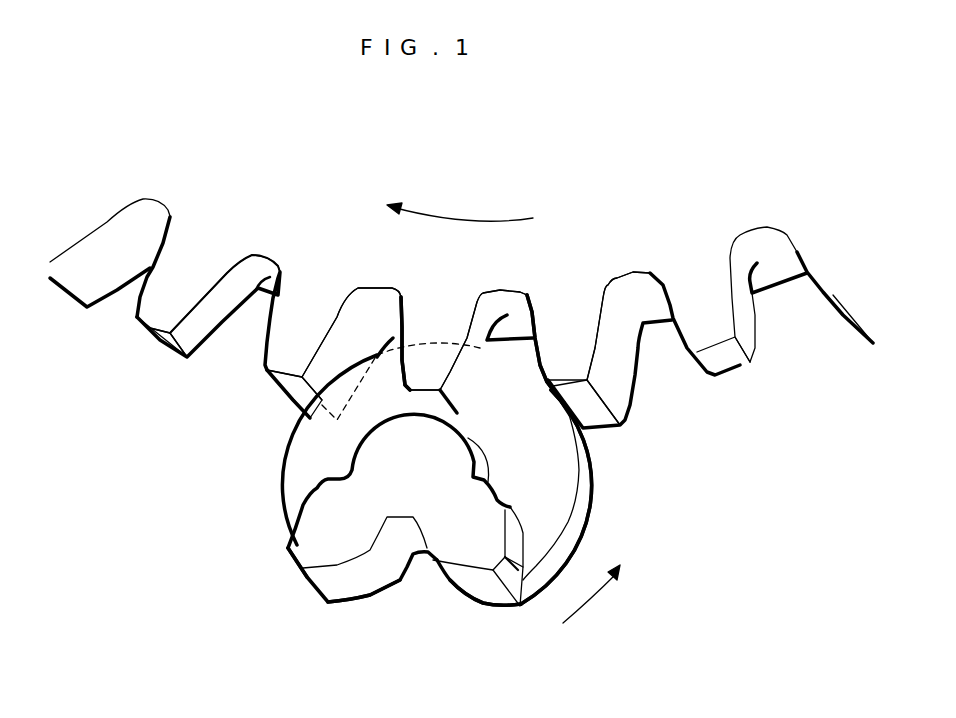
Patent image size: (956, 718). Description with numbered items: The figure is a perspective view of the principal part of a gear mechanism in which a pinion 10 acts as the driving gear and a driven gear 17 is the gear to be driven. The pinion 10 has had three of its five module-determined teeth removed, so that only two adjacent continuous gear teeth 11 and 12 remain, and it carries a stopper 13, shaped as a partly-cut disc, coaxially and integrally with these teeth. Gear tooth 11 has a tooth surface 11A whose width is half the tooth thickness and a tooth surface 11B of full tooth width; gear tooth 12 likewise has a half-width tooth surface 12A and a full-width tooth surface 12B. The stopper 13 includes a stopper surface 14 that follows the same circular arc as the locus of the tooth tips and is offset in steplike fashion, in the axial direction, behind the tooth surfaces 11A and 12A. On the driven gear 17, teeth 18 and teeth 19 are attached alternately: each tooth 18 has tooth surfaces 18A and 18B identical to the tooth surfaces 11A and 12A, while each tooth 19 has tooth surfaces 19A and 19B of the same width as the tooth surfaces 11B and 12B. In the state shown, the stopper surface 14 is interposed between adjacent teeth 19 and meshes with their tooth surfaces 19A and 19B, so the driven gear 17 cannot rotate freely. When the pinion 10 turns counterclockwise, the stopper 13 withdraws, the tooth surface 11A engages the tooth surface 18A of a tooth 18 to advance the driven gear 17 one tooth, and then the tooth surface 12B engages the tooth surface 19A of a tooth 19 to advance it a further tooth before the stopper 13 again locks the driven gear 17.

The pinion 10 is at (252, 521).
The gear tooth 11 is at (467, 547).
The tooth surface 11A is at (533, 593).
The tooth surface 11B is at (482, 590).
The gear tooth 12 is at (312, 538).
The tooth surface 12A is at (293, 517).
The tooth surface 12B is at (327, 580).
The stopper 13 is at (548, 502).
The stopper surface 14 is at (567, 537).
The driven gear 17 is at (283, 203).
The tooth 18 is at (423, 377).
The tooth surface 18A is at (470, 362).
The tooth surface 18B is at (393, 336).
The tooth 19 is at (285, 345).
The tooth surface 19A is at (297, 400).
The tooth surface 19B is at (263, 335).